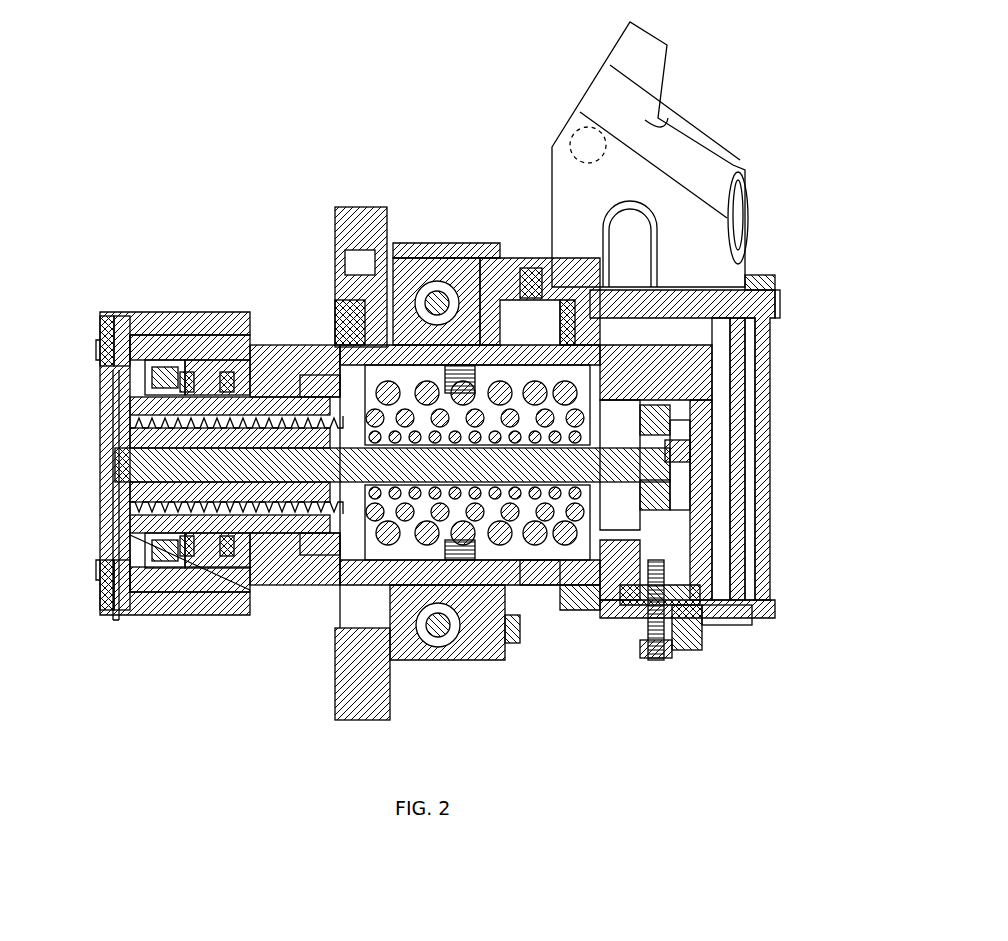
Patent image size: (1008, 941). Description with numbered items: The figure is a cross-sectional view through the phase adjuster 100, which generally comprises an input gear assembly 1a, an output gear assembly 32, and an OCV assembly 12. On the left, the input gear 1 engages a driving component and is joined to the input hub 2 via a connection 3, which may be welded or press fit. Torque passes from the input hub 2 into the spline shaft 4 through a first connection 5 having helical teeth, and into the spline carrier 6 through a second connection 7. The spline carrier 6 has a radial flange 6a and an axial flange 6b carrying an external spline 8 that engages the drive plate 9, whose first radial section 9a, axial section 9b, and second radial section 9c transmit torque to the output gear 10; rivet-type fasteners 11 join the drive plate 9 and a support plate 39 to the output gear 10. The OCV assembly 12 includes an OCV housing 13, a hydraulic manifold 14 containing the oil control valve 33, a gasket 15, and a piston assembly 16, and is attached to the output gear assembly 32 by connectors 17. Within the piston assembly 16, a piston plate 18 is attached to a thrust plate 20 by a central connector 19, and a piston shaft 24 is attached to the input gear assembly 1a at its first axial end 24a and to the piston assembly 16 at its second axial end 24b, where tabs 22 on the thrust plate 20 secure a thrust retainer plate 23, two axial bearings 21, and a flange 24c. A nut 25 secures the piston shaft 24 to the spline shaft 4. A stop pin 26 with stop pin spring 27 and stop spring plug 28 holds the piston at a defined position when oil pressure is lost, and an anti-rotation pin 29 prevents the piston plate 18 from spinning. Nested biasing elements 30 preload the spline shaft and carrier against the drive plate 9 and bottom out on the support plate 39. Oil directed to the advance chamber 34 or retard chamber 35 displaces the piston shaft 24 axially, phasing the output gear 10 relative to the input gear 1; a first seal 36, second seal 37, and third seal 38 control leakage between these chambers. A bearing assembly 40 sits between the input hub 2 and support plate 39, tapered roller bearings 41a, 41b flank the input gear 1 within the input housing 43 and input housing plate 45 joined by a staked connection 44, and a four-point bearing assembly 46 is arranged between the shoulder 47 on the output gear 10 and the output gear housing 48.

The phase adjuster 100 is at (292, 143).
The input gear 1 is at (168, 325).
The input gear assembly 1a is at (118, 525).
The input hub 2 is at (130, 400).
The connection 3 is at (200, 338).
The spline shaft 4 is at (125, 420).
The first connection 5 is at (110, 552).
The spline carrier 6 is at (348, 588).
The radial flange 6a is at (318, 598).
The axial flange 6b is at (510, 648).
The second connection 7 is at (300, 590).
The external spline 8 is at (342, 338).
The drive plate 9 is at (345, 300).
The first radial section 9a is at (402, 662).
The axial section 9b is at (452, 650).
The second radial section 9c is at (695, 396).
The output gear 10 is at (366, 225).
The fastener or connector 11 is at (355, 262).
The OCV assembly 12 is at (788, 300).
The OCV housing 13 is at (760, 355).
The hydraulic manifold 14 is at (718, 162).
The gasket 15 is at (780, 320).
The piston assembly 16 is at (707, 540).
The connector 17 is at (482, 250).
The piston plate 18 is at (690, 458).
The connector or attachment element 19 is at (690, 448).
The thrust plate 20 is at (690, 410).
The axial bearings 21 is at (762, 620).
The tab 22 is at (600, 575).
The thrust retainer plate 23 is at (655, 655).
The piston shaft 24 is at (568, 608).
The first axial end 24a is at (130, 436).
The second axial end 24b is at (690, 480).
The flange 24c is at (690, 440).
The fastener or securing means 25 is at (113, 478).
The stop pin 26 is at (715, 628).
The stop pin spring 27 is at (690, 640).
The stop spring plug 28 is at (660, 660).
The anti-rotation pin 29 is at (765, 288).
The biasing elements 30 is at (512, 612).
The output gear assembly 32 is at (330, 697).
The oil control valve 33 is at (570, 135).
The advance chamber 34 is at (625, 600).
The retard chamber 35 is at (695, 510).
The first seal 36 is at (536, 268).
The second seal 37 is at (535, 585).
The third seal 38 is at (578, 352).
The support plate 39 is at (365, 358).
The bearing assembly 40 is at (278, 345).
The tapered roller bearing 41a is at (238, 615).
The tapered roller bearing 41b is at (195, 615).
The input housing 43 is at (250, 314).
The connection 44 is at (103, 314).
The input housing plate 45 is at (120, 316).
The bearing assembly 46 is at (425, 255).
The abutment or shoulder 47 is at (448, 280).
The output gear housing 48 is at (405, 243).